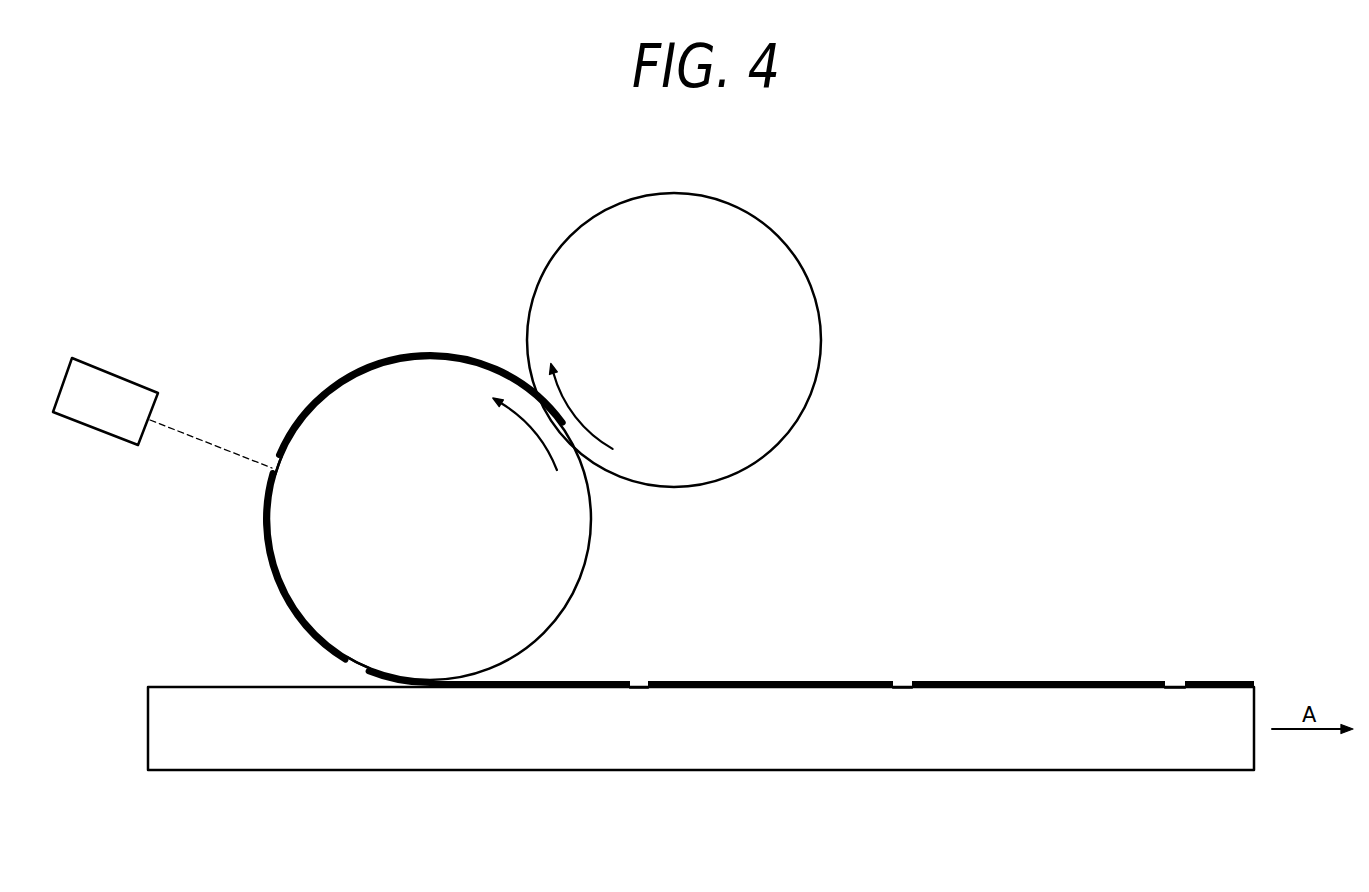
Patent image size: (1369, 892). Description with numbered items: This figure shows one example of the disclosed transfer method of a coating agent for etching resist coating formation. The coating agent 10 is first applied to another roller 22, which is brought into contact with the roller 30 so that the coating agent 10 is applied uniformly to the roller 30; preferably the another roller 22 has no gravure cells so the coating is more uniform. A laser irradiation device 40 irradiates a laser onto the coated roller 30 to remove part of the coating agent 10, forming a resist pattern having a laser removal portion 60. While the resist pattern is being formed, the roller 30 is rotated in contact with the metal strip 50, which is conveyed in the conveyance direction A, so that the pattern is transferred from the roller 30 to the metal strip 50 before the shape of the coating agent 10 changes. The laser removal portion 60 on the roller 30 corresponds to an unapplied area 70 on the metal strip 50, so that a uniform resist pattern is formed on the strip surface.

The coating agent for etching resist coating formation 10 is at (387, 355).
The another roller 22 is at (777, 232).
The roller 30 is at (555, 567).
The laser irradiation device 40 is at (92, 410).
The metal strip 50 is at (698, 735).
The laser removal portion 60 is at (264, 468).
The unapplied area 70 is at (641, 677).